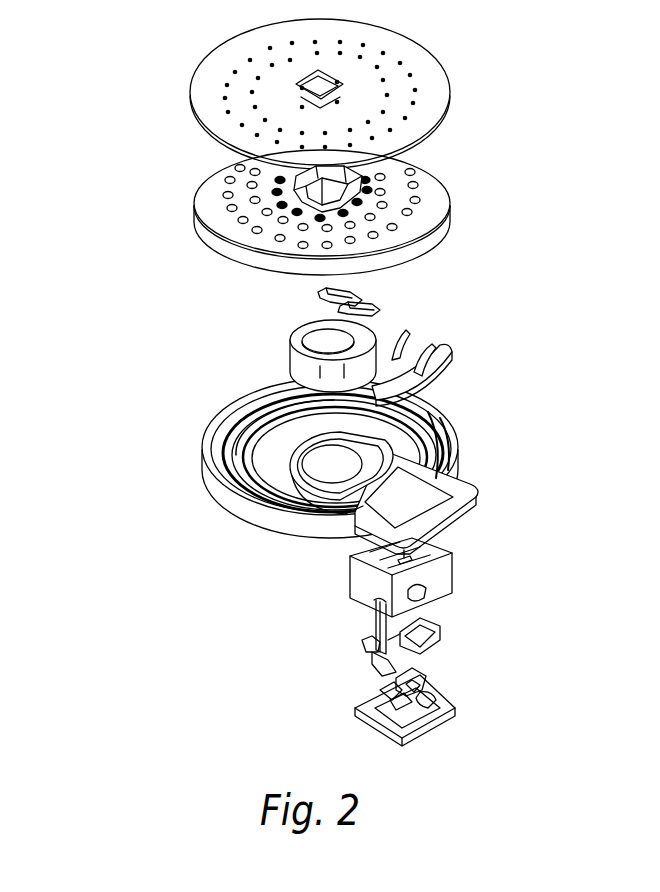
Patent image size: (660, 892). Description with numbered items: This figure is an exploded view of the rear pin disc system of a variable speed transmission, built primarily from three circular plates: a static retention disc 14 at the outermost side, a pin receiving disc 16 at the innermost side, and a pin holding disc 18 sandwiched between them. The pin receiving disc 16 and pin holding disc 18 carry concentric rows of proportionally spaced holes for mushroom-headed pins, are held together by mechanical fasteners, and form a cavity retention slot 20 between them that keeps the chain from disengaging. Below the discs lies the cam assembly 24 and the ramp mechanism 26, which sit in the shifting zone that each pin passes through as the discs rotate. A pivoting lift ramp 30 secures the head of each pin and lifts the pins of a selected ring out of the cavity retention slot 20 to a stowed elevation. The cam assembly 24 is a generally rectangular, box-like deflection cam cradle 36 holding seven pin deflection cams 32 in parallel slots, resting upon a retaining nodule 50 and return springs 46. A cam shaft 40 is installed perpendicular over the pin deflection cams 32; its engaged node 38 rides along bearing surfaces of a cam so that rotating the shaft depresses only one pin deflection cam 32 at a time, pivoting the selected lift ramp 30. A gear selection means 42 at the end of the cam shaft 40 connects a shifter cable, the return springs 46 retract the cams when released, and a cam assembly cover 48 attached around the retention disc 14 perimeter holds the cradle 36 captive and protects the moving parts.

The retention disc 14 is at (453, 520).
The pin receiving disc 16 is at (447, 85).
The pin holding disc 18 is at (452, 190).
The cavity retention slot 20 is at (430, 150).
The cam assembly 24 is at (430, 590).
The ramp mechanism 26 is at (450, 385).
The lift ramp 30 is at (366, 294).
The pin deflection cam 32 is at (435, 635).
The deflection cam cradle 36 is at (270, 386).
The engaged node 38 is at (420, 672).
The cam shaft 40 is at (382, 675).
The gear selection means 42 is at (416, 684).
The return springs 46 is at (447, 437).
The cam assembly cover 48 is at (436, 716).
The retaining nodule 50 is at (365, 642).